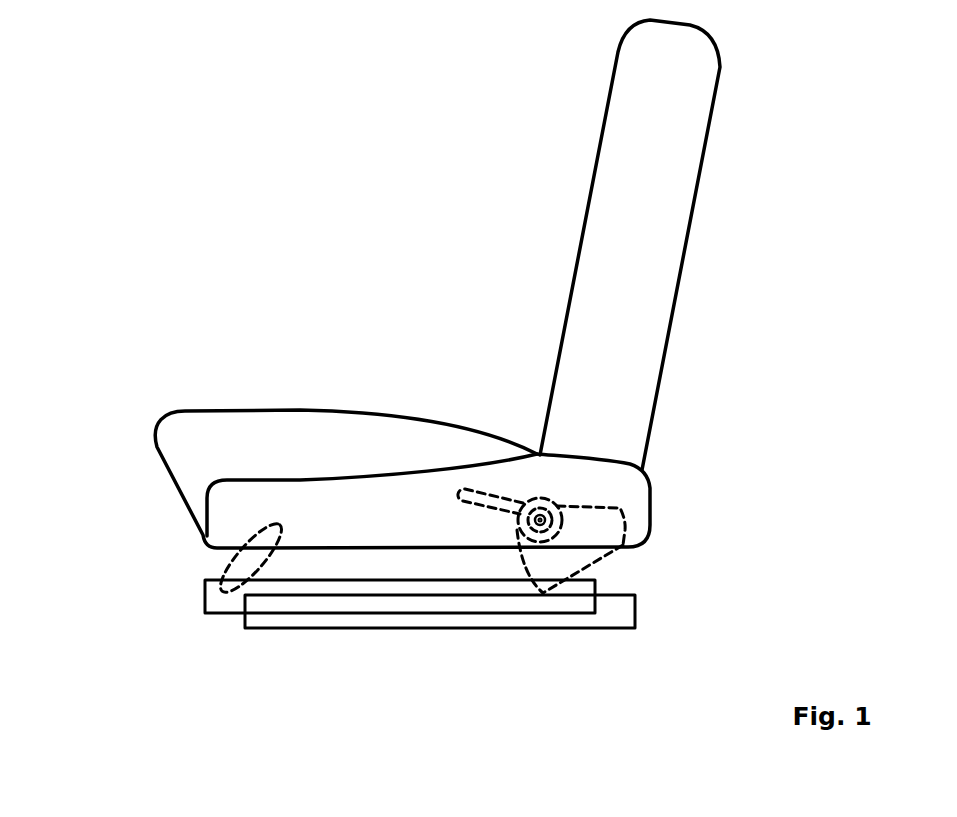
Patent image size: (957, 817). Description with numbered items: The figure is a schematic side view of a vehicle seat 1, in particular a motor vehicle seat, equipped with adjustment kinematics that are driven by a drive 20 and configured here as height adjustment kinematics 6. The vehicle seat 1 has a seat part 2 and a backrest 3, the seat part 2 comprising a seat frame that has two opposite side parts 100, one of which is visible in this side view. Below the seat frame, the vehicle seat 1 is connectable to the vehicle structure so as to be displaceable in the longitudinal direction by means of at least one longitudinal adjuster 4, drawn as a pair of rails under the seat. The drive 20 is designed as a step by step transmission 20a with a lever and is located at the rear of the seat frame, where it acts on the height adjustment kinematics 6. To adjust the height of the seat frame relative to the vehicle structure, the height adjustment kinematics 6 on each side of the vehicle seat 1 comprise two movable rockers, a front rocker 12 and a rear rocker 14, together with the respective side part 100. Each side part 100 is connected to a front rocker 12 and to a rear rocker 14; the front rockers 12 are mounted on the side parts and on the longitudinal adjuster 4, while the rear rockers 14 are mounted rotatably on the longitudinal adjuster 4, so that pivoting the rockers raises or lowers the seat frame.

The vehicle seat 1 is at (352, 122).
The seat part 2 is at (207, 453).
The backrest 3 is at (622, 180).
The side part 100 is at (380, 505).
The longitudinal adjuster 4 is at (645, 612).
The height adjustment kinematics 6 is at (630, 524).
The front rocker 12 is at (240, 565).
The rear rocker 14 is at (595, 558).
The drive 20 is at (522, 535).
The step by step transmission 20a is at (540, 520).